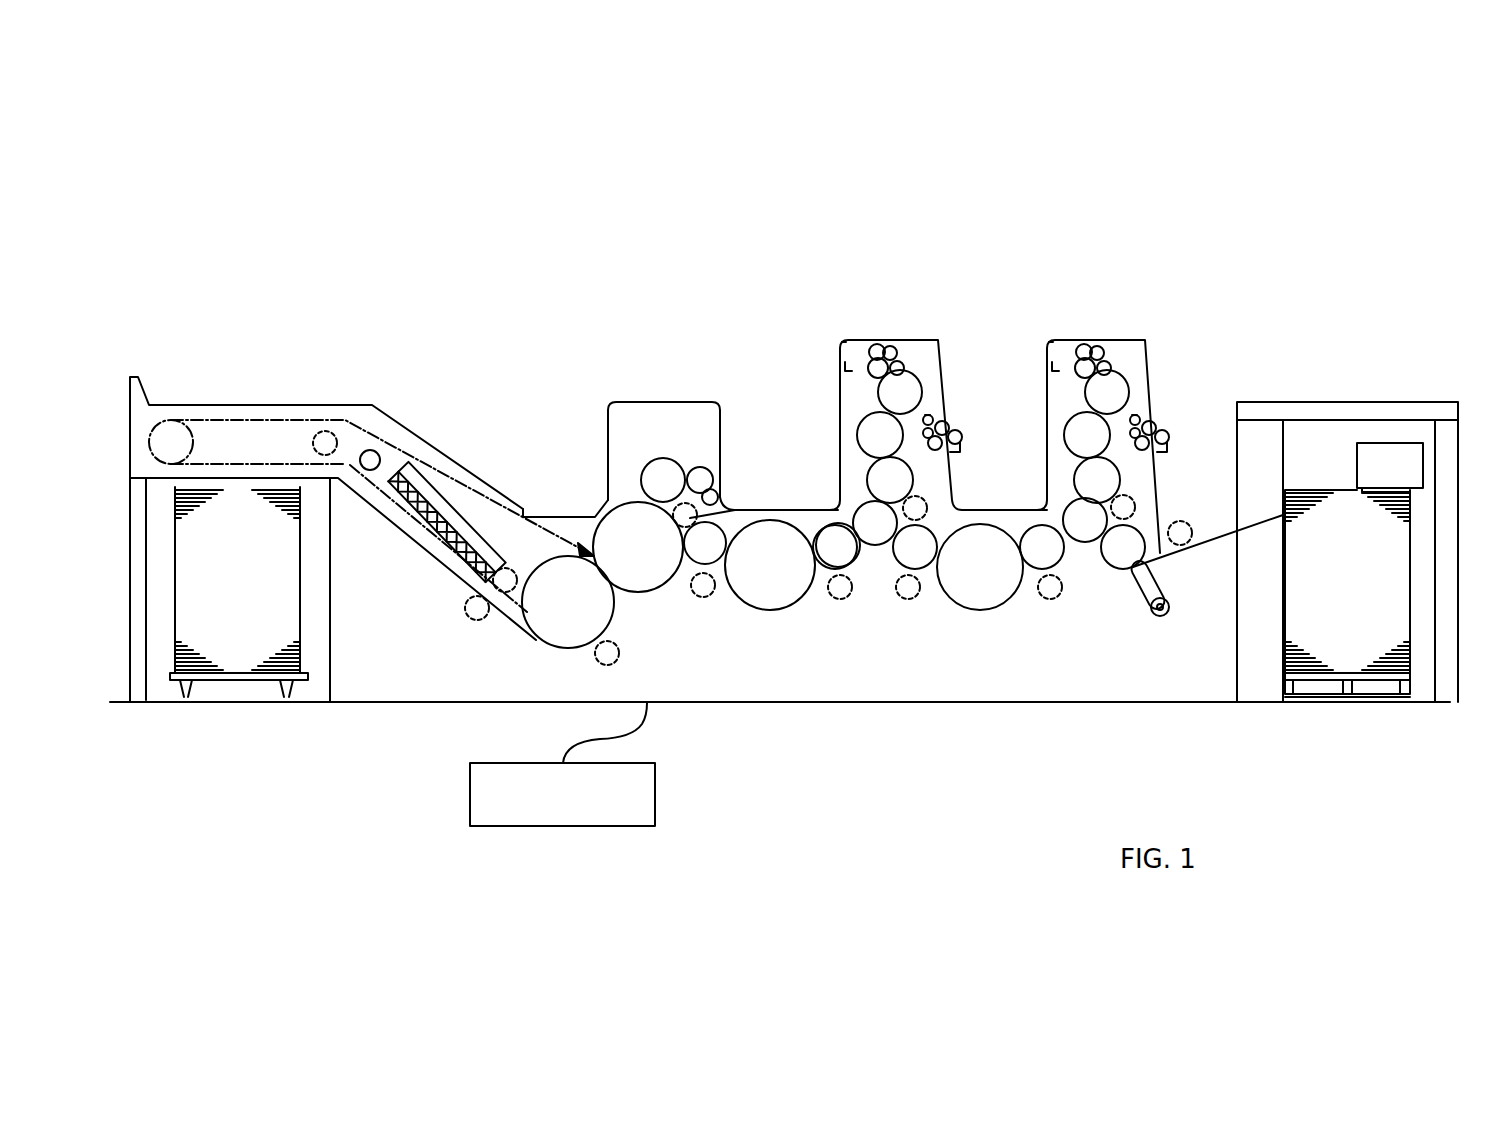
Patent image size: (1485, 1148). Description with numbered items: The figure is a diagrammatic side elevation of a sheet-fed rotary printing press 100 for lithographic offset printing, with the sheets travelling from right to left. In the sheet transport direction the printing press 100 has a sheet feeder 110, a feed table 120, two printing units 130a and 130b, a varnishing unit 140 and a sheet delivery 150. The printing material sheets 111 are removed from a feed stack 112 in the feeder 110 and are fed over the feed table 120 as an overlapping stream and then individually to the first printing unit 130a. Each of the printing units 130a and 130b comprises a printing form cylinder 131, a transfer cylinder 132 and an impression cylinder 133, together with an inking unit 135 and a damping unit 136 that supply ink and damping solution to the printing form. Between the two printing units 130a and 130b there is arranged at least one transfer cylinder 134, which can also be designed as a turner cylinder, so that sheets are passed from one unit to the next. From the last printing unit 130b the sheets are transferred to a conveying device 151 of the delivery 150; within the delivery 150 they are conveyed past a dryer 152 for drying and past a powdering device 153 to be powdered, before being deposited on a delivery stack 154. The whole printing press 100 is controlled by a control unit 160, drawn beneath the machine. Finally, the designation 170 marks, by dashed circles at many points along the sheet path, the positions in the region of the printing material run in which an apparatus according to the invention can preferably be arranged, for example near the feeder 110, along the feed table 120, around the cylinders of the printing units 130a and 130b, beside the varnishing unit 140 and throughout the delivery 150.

The sheet-fed rotary printing press 100 is at (770, 230).
The sheet feeder 110 is at (1296, 330).
The printing material sheets 111 is at (1320, 490).
The feed stack 112 is at (1337, 645).
The feed table 120 is at (1203, 516).
The first printing unit 130a is at (1092, 314).
The second printing unit 130b is at (903, 314).
The printing form cylinder 131 is at (877, 428).
The transfer cylinder 132 is at (873, 480).
The conveying roller 133 is at (875, 540).
The transfer cylinder 134 is at (770, 590).
The inking unit 135 is at (927, 413).
The damping unit 136 is at (860, 347).
The varnishing unit 140 is at (657, 372).
The sheet delivery 150 is at (245, 366).
The conveying device 151 is at (510, 606).
The dryer 152 is at (447, 553).
The powdering device 153 is at (378, 472).
The delivery stack 154 is at (232, 648).
The control unit 160 is at (635, 797).
The positions in the region of the printing material run 170 is at (330, 438).